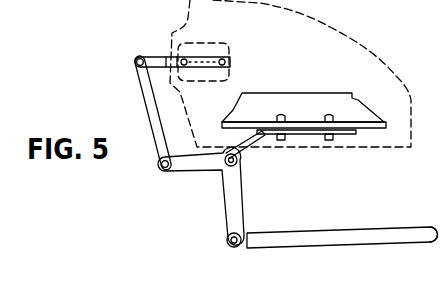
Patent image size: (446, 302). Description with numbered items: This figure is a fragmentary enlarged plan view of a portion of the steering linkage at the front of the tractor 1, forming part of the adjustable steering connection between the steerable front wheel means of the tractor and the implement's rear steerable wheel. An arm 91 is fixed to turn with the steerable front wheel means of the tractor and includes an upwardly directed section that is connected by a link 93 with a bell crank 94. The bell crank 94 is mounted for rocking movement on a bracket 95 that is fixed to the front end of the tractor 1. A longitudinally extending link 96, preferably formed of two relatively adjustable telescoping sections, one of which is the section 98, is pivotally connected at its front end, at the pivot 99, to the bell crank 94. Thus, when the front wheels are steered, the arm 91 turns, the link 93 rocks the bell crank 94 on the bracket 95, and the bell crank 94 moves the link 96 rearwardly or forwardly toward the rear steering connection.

The tractor 1 is at (404, 93).
The arm 91 is at (157, 58).
The link 93 is at (150, 105).
The bell crank 94 is at (246, 201).
The bracket 95 is at (254, 135).
The longitudinally extending link 96 is at (421, 244).
The telescoping section 98 is at (352, 236).
The pivotal connection 99 is at (233, 248).